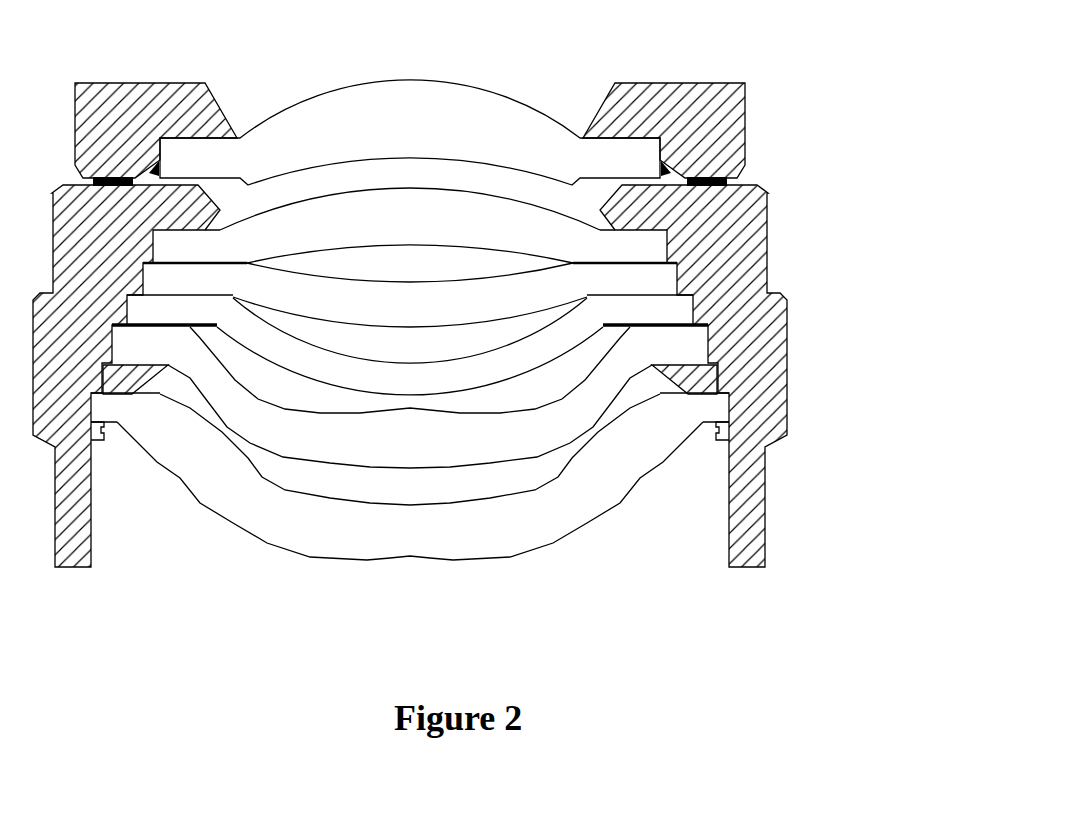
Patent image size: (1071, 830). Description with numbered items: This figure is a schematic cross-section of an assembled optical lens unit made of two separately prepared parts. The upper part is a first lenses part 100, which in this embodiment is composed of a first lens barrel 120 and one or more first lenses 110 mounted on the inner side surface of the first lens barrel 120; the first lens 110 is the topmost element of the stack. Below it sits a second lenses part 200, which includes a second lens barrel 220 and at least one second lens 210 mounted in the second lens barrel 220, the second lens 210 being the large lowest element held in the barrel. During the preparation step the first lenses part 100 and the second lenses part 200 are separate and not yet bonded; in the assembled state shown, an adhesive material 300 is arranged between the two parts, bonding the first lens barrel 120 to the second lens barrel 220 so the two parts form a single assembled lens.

The first lenses part 100 is at (466, 94).
The first lens 110 is at (443, 83).
The first lens barrel 120 is at (667, 97).
The second lenses part 200 is at (475, 416).
The second lens 210 is at (483, 528).
The second lens barrel 220 is at (752, 260).
The adhesive material 300 is at (730, 180).